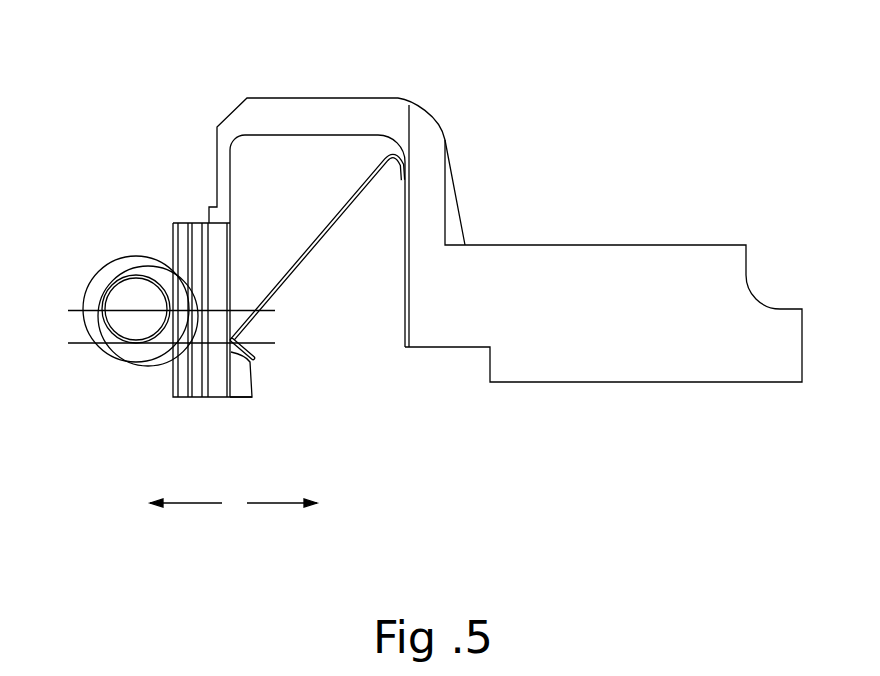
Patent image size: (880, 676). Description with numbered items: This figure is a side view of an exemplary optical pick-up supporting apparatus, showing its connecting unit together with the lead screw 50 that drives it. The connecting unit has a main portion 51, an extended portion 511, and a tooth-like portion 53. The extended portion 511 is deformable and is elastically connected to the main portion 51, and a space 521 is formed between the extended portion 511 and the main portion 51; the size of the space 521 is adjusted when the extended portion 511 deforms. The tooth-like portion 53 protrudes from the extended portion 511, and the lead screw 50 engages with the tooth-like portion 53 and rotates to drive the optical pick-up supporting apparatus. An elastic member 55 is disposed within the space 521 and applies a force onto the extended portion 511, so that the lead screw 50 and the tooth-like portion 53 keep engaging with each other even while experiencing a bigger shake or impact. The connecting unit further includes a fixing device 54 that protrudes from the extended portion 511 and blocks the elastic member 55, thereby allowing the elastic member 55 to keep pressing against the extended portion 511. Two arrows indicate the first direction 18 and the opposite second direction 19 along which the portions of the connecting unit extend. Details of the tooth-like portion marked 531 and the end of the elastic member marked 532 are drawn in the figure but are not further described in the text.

The lead screw 50 is at (117, 324).
The main portion 51 is at (585, 267).
The extended portion 511 is at (225, 143).
The space 521 is at (332, 143).
The tooth-like portion 53 is at (192, 222).
The ring portion 531 is at (160, 364).
The bent end 532 is at (258, 336).
The fixing device 54 is at (240, 383).
The elastic member 55 is at (312, 246).
The first direction 18 is at (167, 503).
The second direction 19 is at (302, 503).